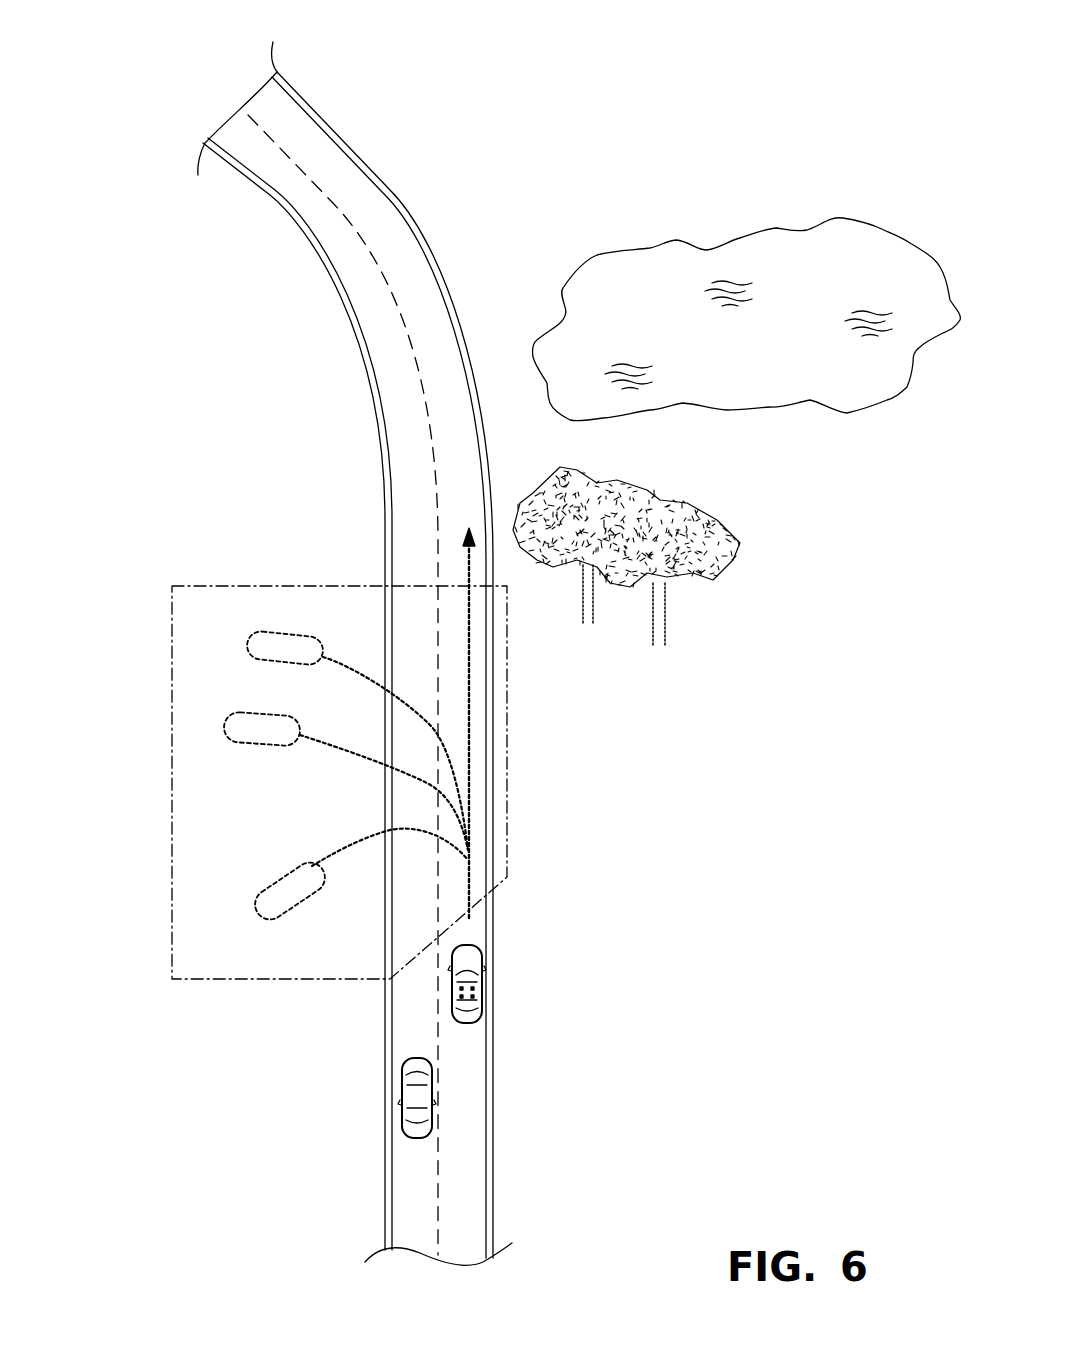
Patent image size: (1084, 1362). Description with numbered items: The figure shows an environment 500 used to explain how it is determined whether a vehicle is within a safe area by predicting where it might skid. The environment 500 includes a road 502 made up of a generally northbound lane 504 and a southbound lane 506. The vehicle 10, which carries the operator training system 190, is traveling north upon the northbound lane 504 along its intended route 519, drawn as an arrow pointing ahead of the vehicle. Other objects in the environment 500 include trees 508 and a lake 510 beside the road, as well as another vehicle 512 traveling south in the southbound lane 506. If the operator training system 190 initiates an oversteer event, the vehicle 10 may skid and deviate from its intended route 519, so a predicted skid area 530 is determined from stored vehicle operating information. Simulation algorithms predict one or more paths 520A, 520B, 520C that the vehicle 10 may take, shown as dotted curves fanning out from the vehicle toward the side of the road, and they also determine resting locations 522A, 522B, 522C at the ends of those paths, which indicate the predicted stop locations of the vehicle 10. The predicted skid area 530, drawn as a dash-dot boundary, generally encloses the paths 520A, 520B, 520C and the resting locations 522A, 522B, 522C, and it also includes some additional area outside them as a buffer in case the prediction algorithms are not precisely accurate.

The environment 500 is at (618, 88).
The road 502 is at (347, 183).
The northbound lane 504 is at (387, 227).
The southbound lane 506 is at (325, 220).
The trees 508 is at (740, 472).
The lake 510 is at (785, 278).
The vehicle 512 is at (413, 1095).
The intended route 519 is at (477, 730).
The path 520A is at (367, 840).
The path 520B is at (333, 747).
The path 520C is at (377, 680).
The resting location 522A is at (262, 918).
The resting location 522B is at (227, 712).
The resting location 522C is at (247, 640).
The predicted skid area 530 is at (170, 600).
The vehicle 10 is at (478, 945).
The operator training system 190 is at (483, 993).